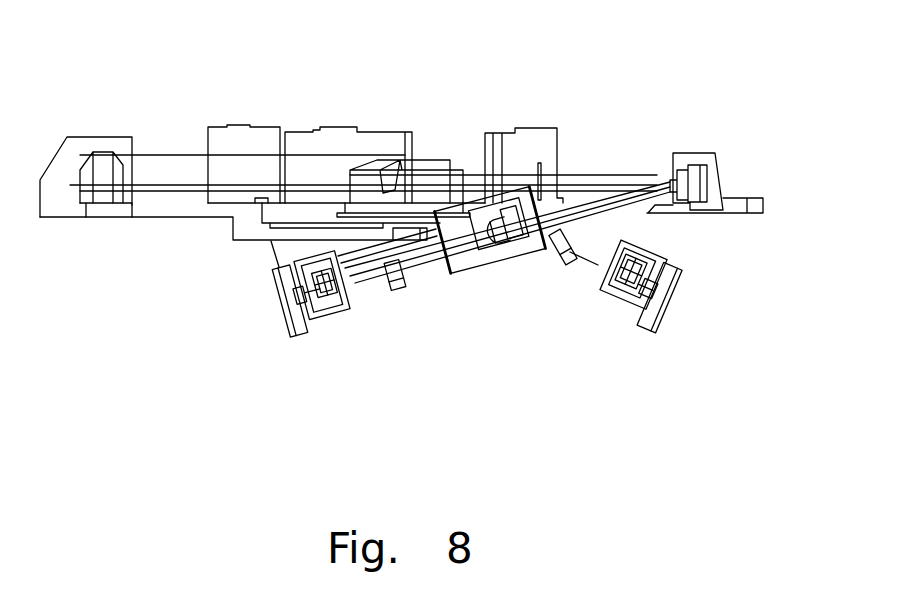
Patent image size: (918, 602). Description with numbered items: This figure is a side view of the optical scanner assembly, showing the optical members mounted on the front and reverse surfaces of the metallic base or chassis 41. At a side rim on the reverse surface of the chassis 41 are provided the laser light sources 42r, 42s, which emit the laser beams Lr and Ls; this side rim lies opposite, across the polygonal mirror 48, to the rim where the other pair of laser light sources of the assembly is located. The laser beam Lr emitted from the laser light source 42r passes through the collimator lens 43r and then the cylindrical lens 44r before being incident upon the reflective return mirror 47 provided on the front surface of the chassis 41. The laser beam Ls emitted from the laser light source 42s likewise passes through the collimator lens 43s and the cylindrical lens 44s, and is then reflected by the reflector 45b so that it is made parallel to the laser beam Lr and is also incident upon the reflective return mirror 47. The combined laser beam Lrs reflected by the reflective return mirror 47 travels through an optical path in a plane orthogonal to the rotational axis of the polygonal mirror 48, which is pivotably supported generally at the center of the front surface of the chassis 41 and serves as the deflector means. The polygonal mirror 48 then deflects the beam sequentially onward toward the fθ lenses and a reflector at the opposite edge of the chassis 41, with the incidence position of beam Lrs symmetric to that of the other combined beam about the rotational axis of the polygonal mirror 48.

The chassis 41 is at (240, 222).
The laser light source 42r is at (287, 307).
The collimator lens 43r is at (333, 313).
The cylindrical lens 44r is at (398, 284).
The reflector 45b is at (506, 250).
The cylindrical lens 44s is at (558, 256).
The collimator lens 43s is at (620, 307).
The laser light source 42s is at (667, 307).
The reflective return mirror 47 is at (686, 155).
The polygonal mirror 48 is at (427, 167).